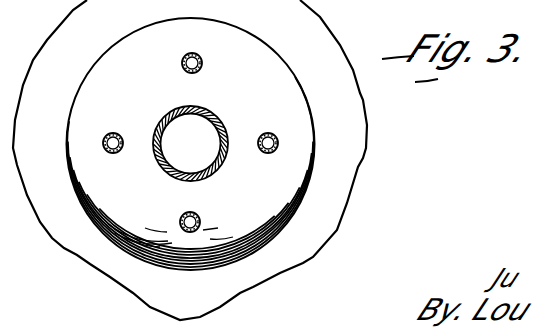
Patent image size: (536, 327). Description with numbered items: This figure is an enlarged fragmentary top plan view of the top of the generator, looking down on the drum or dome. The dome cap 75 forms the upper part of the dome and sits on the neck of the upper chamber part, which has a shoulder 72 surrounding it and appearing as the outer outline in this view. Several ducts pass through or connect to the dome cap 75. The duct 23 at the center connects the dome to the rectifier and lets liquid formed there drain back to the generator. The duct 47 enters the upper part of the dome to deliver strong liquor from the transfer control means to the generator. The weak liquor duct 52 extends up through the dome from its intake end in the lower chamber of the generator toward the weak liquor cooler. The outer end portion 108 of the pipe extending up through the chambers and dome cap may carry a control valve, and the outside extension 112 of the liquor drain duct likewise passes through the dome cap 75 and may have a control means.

The duct 23 is at (160, 161).
The duct 47 is at (114, 133).
The weak liquor duct 52 is at (275, 152).
The shoulder 72 is at (327, 205).
The dome cap 75 is at (160, 266).
The outer end portion 108 is at (203, 63).
The outside extension 112 is at (209, 207).